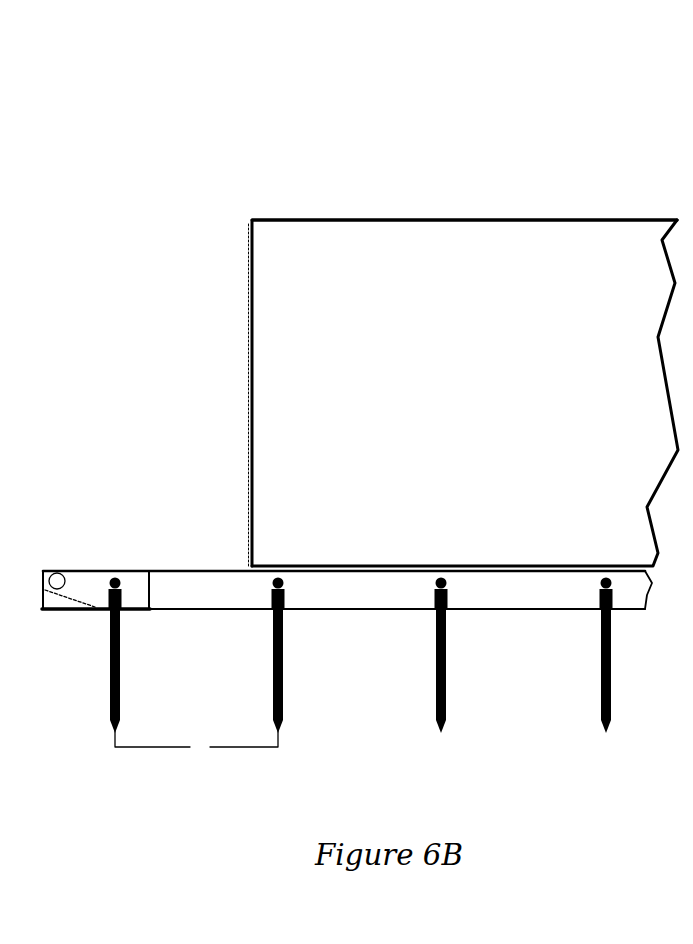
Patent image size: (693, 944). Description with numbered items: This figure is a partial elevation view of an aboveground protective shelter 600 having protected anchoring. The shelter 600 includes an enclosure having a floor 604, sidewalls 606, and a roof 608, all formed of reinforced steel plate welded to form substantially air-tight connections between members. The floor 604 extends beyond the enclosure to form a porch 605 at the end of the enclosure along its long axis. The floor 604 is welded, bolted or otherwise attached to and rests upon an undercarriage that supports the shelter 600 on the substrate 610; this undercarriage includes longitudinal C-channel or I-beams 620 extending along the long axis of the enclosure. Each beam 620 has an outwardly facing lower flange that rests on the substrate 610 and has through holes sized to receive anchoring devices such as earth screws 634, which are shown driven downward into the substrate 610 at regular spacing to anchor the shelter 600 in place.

The aboveground protective shelter 600 is at (474, 122).
The floor 604 is at (127, 571).
The porch 605 is at (112, 492).
The sidewall 606 is at (377, 328).
The roof 608 is at (519, 220).
The substrate 610 is at (45, 607).
The longitudinal beam 620 is at (214, 612).
The earth screw 634 is at (112, 677).